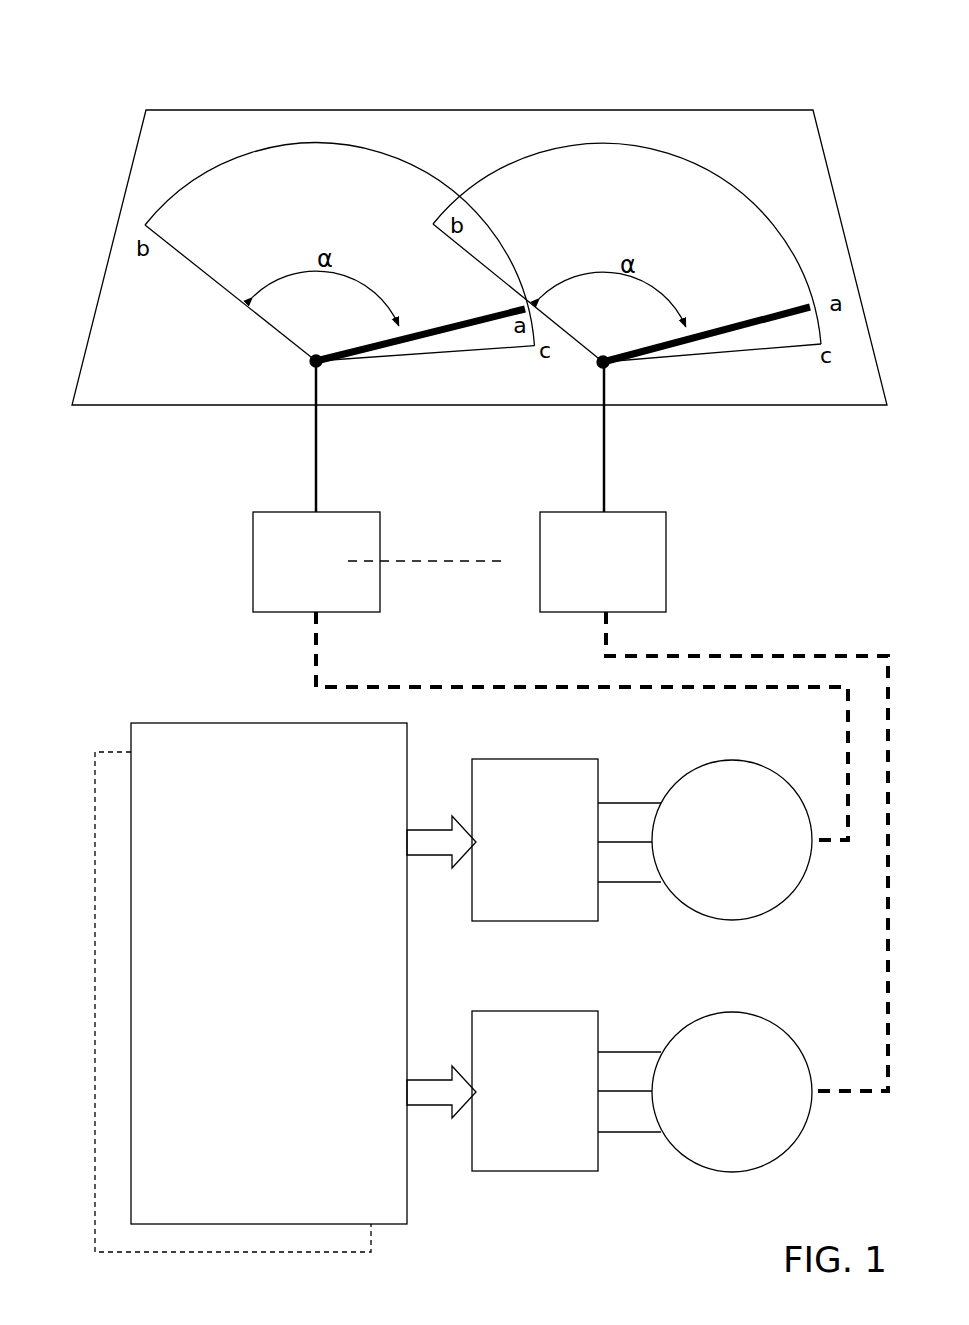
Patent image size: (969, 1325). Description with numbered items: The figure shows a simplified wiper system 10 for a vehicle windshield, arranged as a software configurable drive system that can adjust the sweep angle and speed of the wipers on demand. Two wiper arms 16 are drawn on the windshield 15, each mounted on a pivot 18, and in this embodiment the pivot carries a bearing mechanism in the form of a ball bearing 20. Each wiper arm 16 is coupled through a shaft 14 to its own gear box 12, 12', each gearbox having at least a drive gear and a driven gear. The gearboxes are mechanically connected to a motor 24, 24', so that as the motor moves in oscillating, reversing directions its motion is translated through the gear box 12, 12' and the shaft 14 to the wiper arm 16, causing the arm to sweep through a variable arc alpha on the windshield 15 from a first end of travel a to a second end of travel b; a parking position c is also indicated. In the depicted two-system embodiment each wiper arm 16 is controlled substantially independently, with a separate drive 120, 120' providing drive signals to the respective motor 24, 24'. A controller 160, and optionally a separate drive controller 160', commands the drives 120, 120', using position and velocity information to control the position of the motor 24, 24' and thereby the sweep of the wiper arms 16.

The wiper system 10 is at (80, 64).
The windshield 15 is at (479, 232).
The wiper arm 16 is at (563, 293).
The pivot 18 is at (411, 375).
The ball bearing 20 is at (568, 375).
The shaft 14 is at (410, 436).
The gear box 12 is at (316, 562).
The gear box 12' is at (603, 562).
The controller 160 is at (269, 973).
The drive controller 160' is at (233, 956).
The drive 120 is at (566, 840).
The drive 120' is at (566, 1091).
The motor 24 is at (732, 840).
The motor 24' is at (732, 1092).